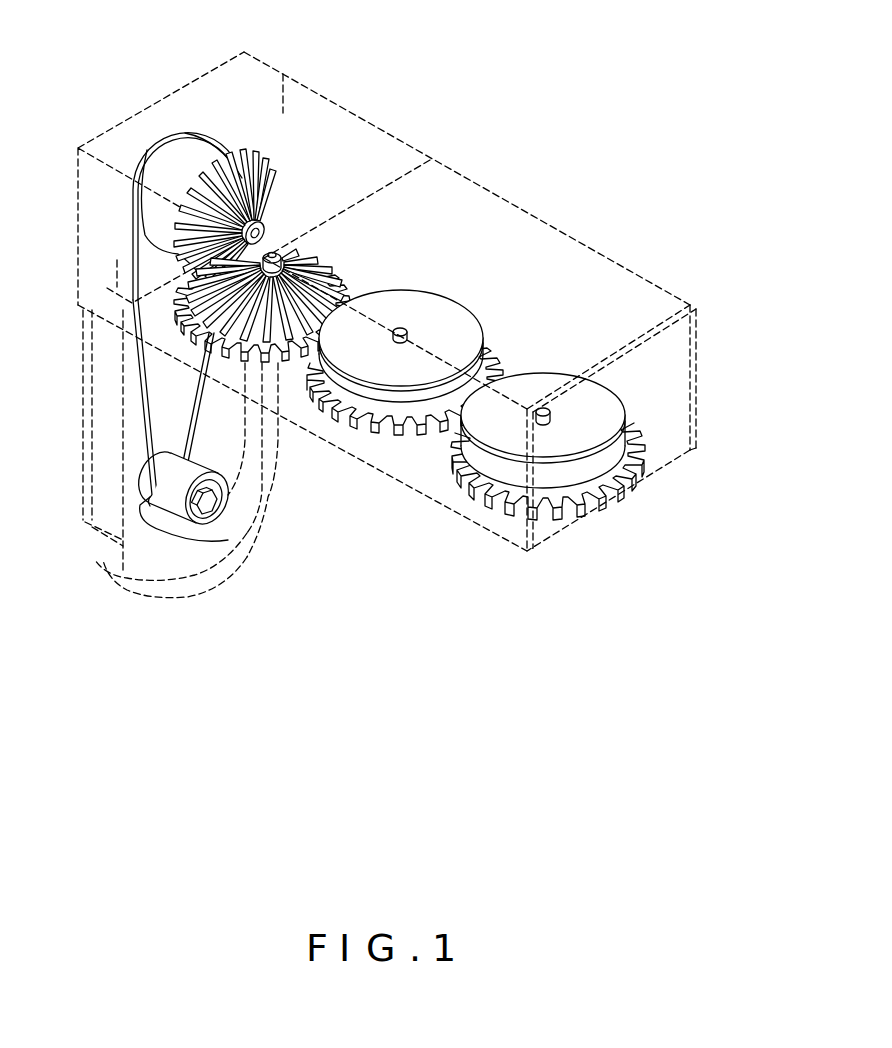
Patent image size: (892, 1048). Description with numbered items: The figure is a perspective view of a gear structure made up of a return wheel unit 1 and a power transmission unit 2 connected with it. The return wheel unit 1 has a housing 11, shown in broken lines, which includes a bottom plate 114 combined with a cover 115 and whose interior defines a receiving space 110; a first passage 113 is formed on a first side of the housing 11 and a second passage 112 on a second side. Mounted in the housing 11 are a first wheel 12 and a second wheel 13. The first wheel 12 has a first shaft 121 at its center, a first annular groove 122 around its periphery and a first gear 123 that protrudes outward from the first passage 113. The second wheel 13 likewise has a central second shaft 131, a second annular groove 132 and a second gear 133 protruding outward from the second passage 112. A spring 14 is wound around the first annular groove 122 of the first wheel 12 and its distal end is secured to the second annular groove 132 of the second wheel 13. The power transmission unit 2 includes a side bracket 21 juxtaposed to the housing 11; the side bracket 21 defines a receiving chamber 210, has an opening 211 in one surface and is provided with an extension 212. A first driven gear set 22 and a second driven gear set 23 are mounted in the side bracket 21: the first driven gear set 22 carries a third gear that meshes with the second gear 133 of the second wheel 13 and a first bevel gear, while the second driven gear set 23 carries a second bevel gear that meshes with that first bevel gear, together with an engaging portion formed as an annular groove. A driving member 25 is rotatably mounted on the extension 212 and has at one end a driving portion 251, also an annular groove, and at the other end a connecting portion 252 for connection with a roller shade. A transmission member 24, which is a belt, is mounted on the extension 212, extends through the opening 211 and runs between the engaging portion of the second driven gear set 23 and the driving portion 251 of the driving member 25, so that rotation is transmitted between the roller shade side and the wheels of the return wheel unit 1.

The return wheel unit 1 is at (645, 238).
The housing 11 is at (557, 257).
The receiving space 110 is at (672, 417).
The second passage 112 is at (407, 172).
The first passage 113 is at (692, 440).
The bottom plate 114 is at (630, 497).
The cover 115 is at (691, 308).
The first wheel 12 is at (634, 443).
The first shaft 121 is at (543, 405).
The first annular groove 122 is at (587, 510).
The first gear 123 is at (538, 512).
The second wheel 13 is at (410, 297).
The second shaft 131 is at (405, 331).
The second annular groove 132 is at (333, 388).
The second gear 133 is at (422, 398).
The spring 14 is at (415, 427).
The power transmission unit 2 is at (354, 101).
The side bracket 21 is at (180, 90).
The receiving chamber 210 is at (282, 73).
The opening 211 is at (117, 287).
The extension 212 is at (92, 522).
The first driven gear set 22 is at (279, 252).
The second driven gear set 23 is at (183, 163).
The transmission member 24 is at (212, 513).
The driving member 25 is at (228, 540).
The driving portion 251 is at (167, 458).
The connecting portion 252 is at (251, 517).